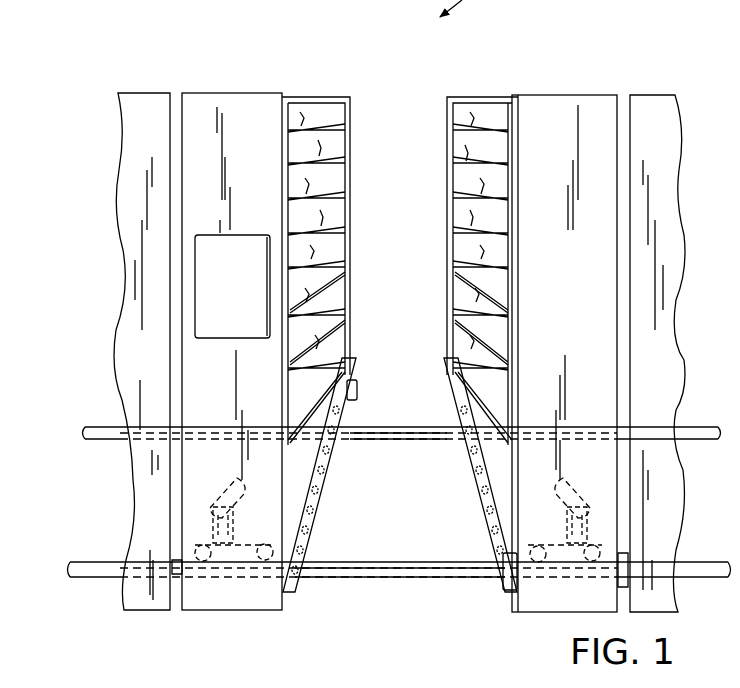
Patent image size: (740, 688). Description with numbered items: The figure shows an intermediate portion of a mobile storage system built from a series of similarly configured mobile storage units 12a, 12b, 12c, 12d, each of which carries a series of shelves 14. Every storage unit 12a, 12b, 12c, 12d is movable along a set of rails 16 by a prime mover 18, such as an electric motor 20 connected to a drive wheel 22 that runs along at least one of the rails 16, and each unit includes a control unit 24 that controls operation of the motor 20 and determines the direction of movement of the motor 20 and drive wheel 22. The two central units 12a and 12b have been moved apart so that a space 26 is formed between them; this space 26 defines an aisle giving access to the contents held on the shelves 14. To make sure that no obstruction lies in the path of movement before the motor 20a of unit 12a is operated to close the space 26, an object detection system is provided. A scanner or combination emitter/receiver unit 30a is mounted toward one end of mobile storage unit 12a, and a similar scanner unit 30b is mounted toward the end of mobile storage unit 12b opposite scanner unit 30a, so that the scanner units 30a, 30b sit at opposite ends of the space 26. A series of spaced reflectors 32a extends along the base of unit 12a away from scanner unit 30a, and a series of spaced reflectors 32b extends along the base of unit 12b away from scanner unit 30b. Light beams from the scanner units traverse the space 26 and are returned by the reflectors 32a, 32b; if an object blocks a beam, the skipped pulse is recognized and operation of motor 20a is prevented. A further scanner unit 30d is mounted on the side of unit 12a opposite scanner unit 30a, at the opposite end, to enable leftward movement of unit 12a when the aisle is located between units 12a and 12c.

The mobile storage unit 12a is at (235, 76).
The mobile storage unit 12b is at (560, 76).
The mobile storage unit 12c is at (140, 76).
The mobile storage unit 12d is at (660, 76).
The shelves 14 is at (318, 157).
The rails 16 is at (400, 428).
The prime mover 18 is at (197, 517).
The electric motor 20 is at (560, 480).
The motor 20a is at (250, 479).
The drive wheel 22 is at (192, 546).
The control unit 24 is at (212, 285).
The space 26 is at (385, 406).
The scanner or combination emitter/receiver unit 30a is at (358, 382).
The scanner or combination emitter/receiver unit 30b is at (506, 592).
The scanner unit 30d is at (178, 584).
The spaced reflectors 32a is at (335, 473).
The spaced reflectors 32b is at (480, 470).